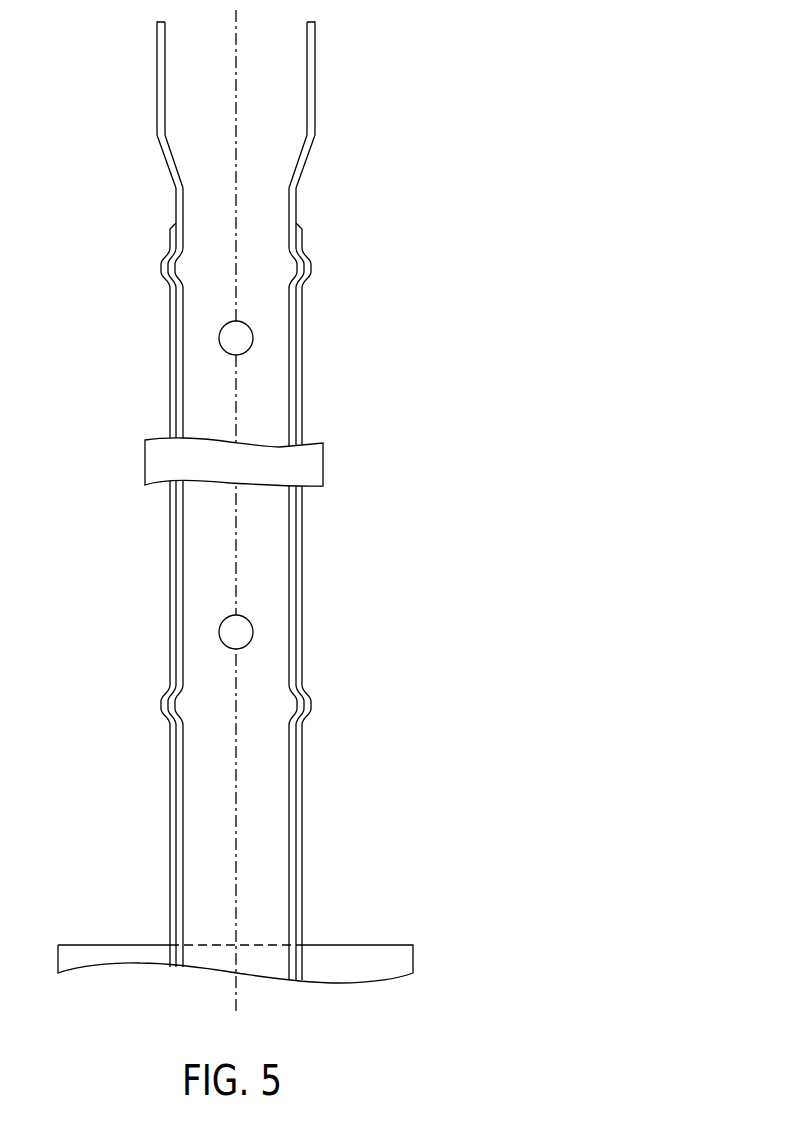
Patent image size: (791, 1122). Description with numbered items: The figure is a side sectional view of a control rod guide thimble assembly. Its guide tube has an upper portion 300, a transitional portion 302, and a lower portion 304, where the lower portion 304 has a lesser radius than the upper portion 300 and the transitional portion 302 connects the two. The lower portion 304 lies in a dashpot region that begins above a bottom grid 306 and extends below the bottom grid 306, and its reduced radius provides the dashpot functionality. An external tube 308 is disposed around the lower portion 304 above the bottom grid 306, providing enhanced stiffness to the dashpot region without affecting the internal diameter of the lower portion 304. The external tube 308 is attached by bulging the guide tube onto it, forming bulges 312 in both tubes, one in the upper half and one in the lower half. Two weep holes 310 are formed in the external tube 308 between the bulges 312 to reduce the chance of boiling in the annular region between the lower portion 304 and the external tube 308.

The upper portion 300 is at (315, 68).
The transitional portion 302 is at (300, 170).
The lower portion 304 is at (289, 320).
The bottom grid 306 is at (413, 960).
The external tube 308 is at (302, 324).
The weep holes 310 is at (270, 632).
The bulges 312 is at (331, 264).